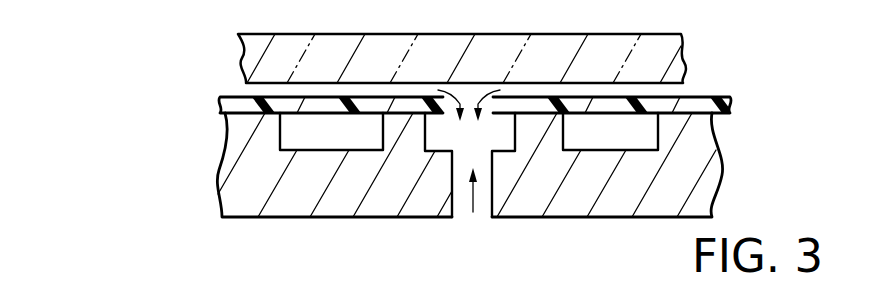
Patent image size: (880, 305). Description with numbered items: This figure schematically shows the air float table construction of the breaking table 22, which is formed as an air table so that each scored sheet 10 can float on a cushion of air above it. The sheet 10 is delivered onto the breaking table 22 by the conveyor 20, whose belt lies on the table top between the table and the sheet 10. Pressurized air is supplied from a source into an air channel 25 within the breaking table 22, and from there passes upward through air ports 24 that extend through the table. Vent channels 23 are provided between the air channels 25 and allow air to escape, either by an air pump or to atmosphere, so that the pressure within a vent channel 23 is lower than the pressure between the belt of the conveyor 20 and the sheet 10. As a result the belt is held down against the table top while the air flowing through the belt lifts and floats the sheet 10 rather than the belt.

The sheet 10 is at (605, 47).
The conveyor 20 is at (704, 97).
The breaking table 22 is at (685, 173).
The vent channel 23 is at (334, 142).
The air port 24 is at (465, 102).
The air channel 25 is at (453, 141).